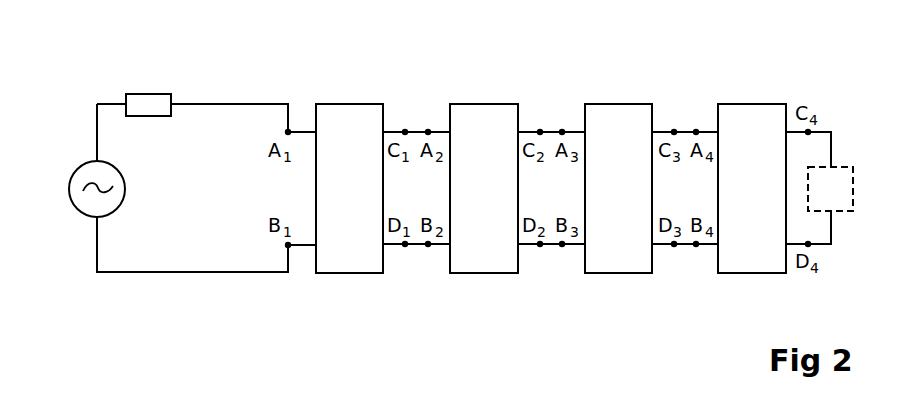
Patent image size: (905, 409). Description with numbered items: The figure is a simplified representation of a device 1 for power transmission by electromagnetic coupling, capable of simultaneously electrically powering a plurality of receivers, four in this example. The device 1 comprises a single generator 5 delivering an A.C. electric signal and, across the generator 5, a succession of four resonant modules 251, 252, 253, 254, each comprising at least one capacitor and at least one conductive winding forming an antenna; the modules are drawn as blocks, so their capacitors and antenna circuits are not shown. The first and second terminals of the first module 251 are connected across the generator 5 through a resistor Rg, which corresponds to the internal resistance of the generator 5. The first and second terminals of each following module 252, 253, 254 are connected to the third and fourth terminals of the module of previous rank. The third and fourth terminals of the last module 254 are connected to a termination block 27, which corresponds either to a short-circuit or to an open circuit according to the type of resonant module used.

The device 1 is at (84, 56).
The generator 5 is at (82, 165).
The resistor Rg is at (150, 93).
The resonant module 251 is at (355, 273).
The resonant module 252 is at (489, 273).
The resonant module 253 is at (613, 273).
The resonant module 254 is at (748, 273).
The termination block 27 is at (843, 165).